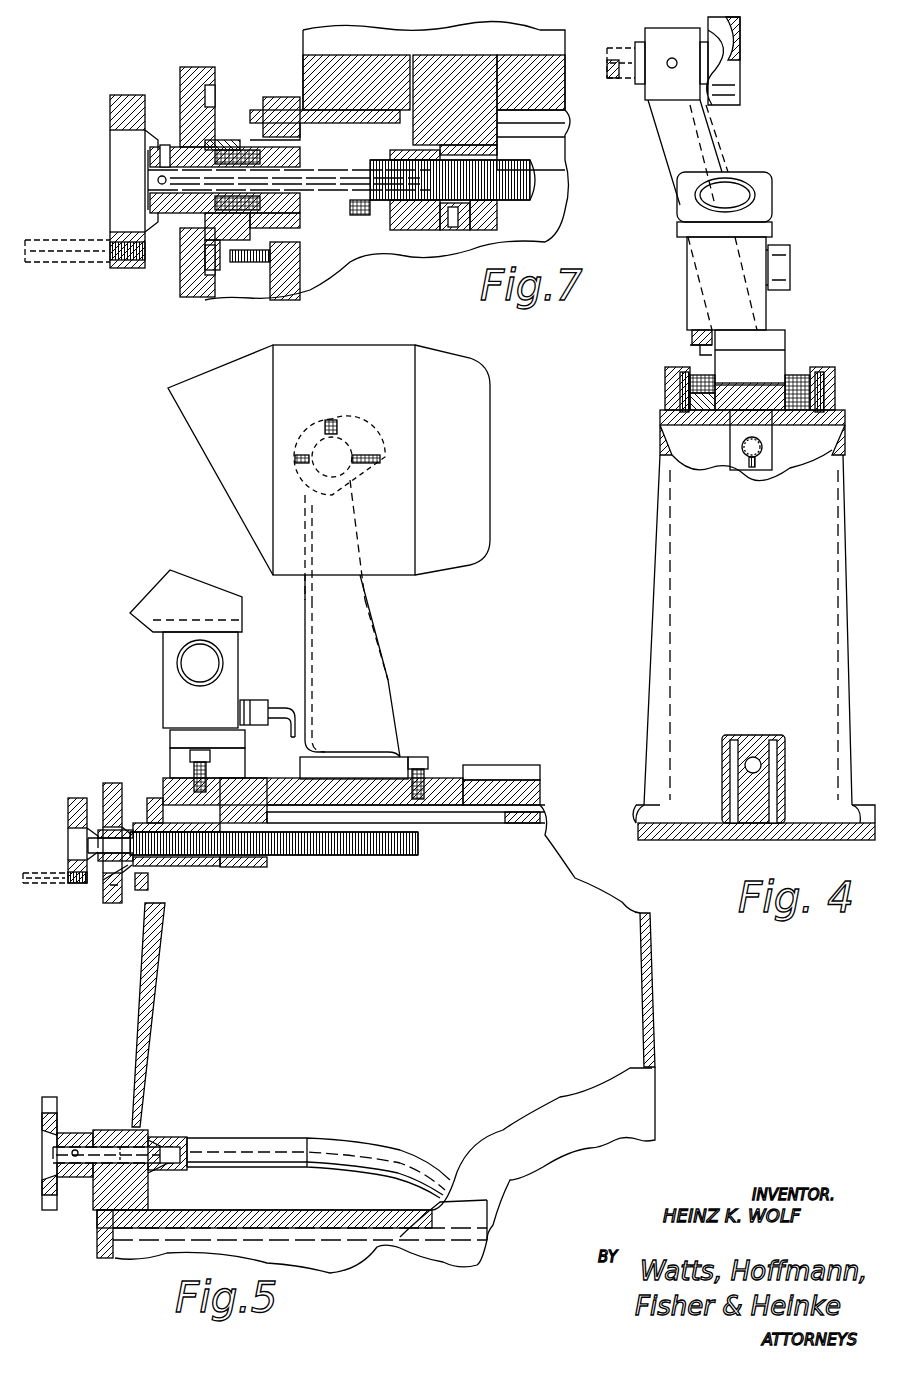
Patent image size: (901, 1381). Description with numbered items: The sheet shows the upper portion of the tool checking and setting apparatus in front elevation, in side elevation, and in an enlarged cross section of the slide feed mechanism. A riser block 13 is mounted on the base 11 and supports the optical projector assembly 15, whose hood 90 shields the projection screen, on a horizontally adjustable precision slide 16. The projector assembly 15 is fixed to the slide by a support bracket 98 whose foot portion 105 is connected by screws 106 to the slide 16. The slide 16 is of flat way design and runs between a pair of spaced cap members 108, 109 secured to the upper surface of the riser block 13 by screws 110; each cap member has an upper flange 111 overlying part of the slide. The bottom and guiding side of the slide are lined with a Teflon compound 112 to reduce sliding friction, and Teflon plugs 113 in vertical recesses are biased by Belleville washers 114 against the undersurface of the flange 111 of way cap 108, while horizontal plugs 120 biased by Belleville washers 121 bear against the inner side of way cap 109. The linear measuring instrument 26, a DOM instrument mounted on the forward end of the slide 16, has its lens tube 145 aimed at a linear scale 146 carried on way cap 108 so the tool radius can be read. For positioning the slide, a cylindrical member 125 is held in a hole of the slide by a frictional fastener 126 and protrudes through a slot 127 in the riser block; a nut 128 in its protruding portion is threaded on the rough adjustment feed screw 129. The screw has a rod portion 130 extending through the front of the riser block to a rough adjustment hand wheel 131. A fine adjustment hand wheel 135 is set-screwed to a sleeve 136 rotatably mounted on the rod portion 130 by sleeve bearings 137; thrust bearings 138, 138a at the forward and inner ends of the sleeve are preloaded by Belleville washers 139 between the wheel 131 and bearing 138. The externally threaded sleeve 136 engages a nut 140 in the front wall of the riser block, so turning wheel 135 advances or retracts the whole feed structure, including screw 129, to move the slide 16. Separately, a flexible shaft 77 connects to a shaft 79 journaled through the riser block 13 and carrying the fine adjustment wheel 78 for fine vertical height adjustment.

In FIG. 5, the base 11 is at (656, 1002).
In FIG. 4, the riser block 13 is at (660, 500).
In FIG. 5, the optical projector assembly 15 is at (372, 347).
In FIG. 7, the precision slide 16 is at (545, 60).
In FIG. 4, the precision slide 16 is at (750, 383).
In FIG. 5, the precision slide 16 is at (470, 780).
In FIG. 4, the linear measuring instrument 26 is at (786, 203).
In FIG. 5, the linear measuring instrument 26 is at (150, 662).
In FIG. 5, the flexible shaft 77 is at (390, 1148).
In FIG. 5, the fine adjustment wheel 78 is at (60, 1100).
In FIG. 5, the shaft 79 is at (165, 1135).
In FIG. 5, the hood 90 is at (215, 378).
In FIG. 4, the support bracket 98 is at (717, 153).
In FIG. 5, the support bracket 98 is at (390, 660).
In FIG. 5, the foot portion 105 is at (388, 762).
In FIG. 5, the screws 106 is at (210, 778).
In FIG. 4, the cap member 108 is at (666, 372).
In FIG. 4, the cap member 109 is at (822, 372).
In FIG. 4, the screws 110 is at (670, 416).
In FIG. 4, the upper flange 111 is at (676, 370).
In FIG. 7, the Teflon compound lining 112 is at (565, 122).
In FIG. 4, the Teflon compound lining 112 is at (718, 420).
In FIG. 5, the Teflon compound lining 112 is at (440, 812).
In FIG. 4, the plug 113 is at (682, 386).
In FIG. 4, the Belleville washers 114 is at (680, 399).
In FIG. 4, the plug 120 is at (790, 428).
In FIG. 4, the Belleville washers 121 is at (792, 372).
In FIG. 7, the cylindrical member 125 is at (465, 78).
In FIG. 5, the cylindrical member 125 is at (262, 790).
In FIG. 7, the frictional fastener 126 is at (407, 78).
In FIG. 7, the slot 127 is at (530, 130).
In FIG. 5, the slot 127 is at (480, 823).
In FIG. 7, the nut 128 is at (415, 232).
In FIG. 4, the nut 128 is at (745, 470).
In FIG. 5, the nut 128 is at (268, 866).
In FIG. 7, the rough adjustment feed screw 129 is at (530, 172).
In FIG. 4, the rough adjustment feed screw 129 is at (760, 455).
In FIG. 5, the rough adjustment feed screw 129 is at (362, 855).
In FIG. 7, the rod portion 130 is at (150, 176).
In FIG. 5, the rod portion 130 is at (88, 842).
In FIG. 7, the rough adjustment hand wheel 131 is at (128, 95).
In FIG. 5, the rough adjustment hand wheel 131 is at (75, 798).
In FIG. 7, the fine adjustment hand wheel 135 is at (194, 67).
In FIG. 5, the fine adjustment hand wheel 135 is at (113, 783).
In FIG. 7, the sleeve 136 is at (325, 245).
In FIG. 5, the sleeve 136 is at (150, 798).
In FIG. 7, the sleeve bearings 137 is at (248, 147).
In FIG. 7, the thrust bearing 138 is at (237, 142).
In FIG. 5, the thrust bearing 138 is at (128, 872).
In FIG. 7, the thrust bearing 138a is at (360, 213).
In FIG. 7, the Belleville washers 139 is at (218, 238).
In FIG. 5, the Belleville washers 139 is at (200, 857).
In FIG. 7, the nut 140 is at (268, 270).
In FIG. 5, the nut 140 is at (148, 890).
In FIG. 4, the lens tube 145 is at (686, 330).
In FIG. 4, the linear scale 146 is at (696, 345).